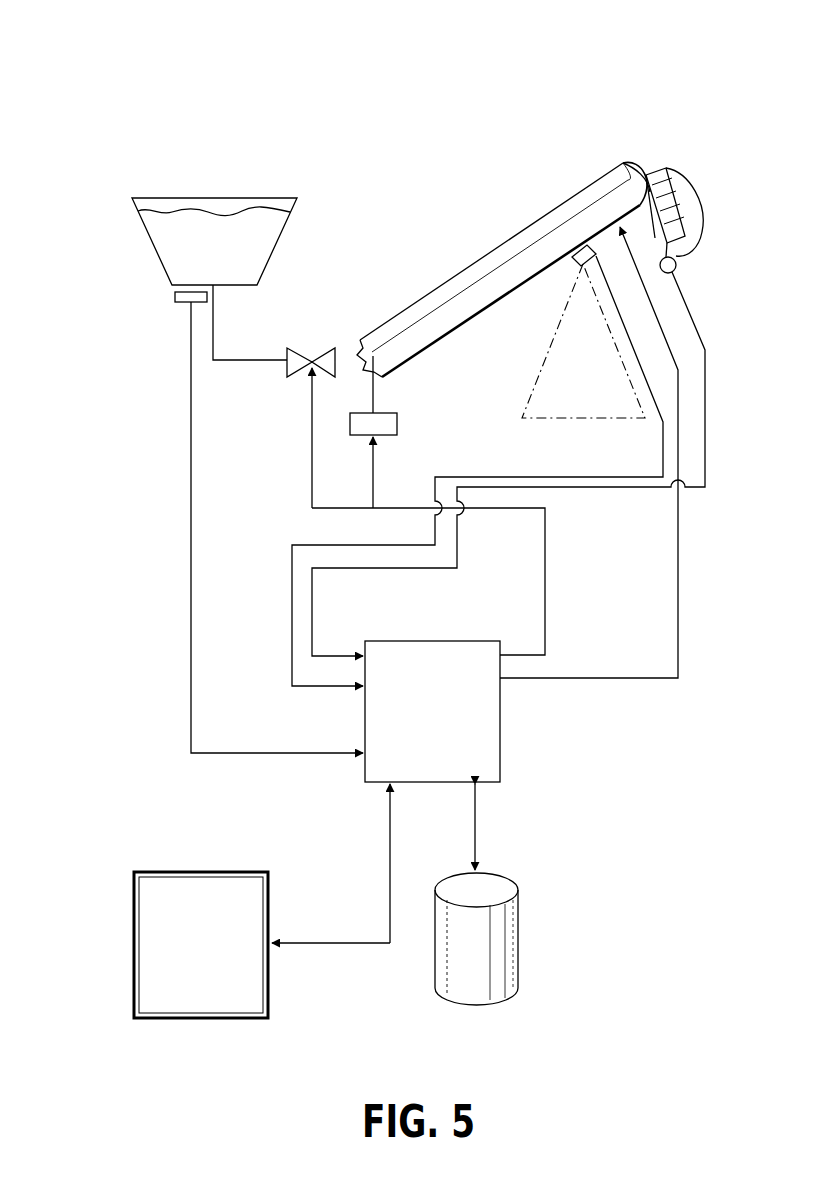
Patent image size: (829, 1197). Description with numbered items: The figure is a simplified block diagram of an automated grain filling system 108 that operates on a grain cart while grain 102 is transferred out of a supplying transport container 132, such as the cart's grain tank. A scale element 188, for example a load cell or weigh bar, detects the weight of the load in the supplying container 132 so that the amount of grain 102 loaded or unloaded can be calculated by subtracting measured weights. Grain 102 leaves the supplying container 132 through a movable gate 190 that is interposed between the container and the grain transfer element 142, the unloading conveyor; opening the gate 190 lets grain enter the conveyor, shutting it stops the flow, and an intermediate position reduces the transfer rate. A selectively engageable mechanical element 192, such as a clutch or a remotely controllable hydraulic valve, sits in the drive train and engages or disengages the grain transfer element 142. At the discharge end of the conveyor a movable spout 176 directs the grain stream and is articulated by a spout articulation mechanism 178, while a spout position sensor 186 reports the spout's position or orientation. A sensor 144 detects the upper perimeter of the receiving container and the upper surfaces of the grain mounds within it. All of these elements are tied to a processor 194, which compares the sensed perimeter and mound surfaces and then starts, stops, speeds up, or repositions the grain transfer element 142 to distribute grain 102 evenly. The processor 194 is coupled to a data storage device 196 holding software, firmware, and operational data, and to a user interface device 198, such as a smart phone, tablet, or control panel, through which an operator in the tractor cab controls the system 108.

The automated grain filling system 108 is at (125, 55).
The grain 102 is at (235, 230).
The supplying transport container 132 is at (152, 241).
The scale element 188 is at (177, 298).
The movable gate 190 is at (313, 360).
The selectively engageable mechanical element 192 is at (397, 425).
The grain transfer element 142 is at (458, 276).
The sensor 144 is at (576, 254).
The movable spout 176 is at (683, 212).
The spout articulation mechanism 178 is at (638, 172).
The spout position sensor 186 is at (677, 266).
The processor 194 is at (500, 753).
The data storage device 196 is at (519, 918).
The user interface device 198 is at (175, 871).